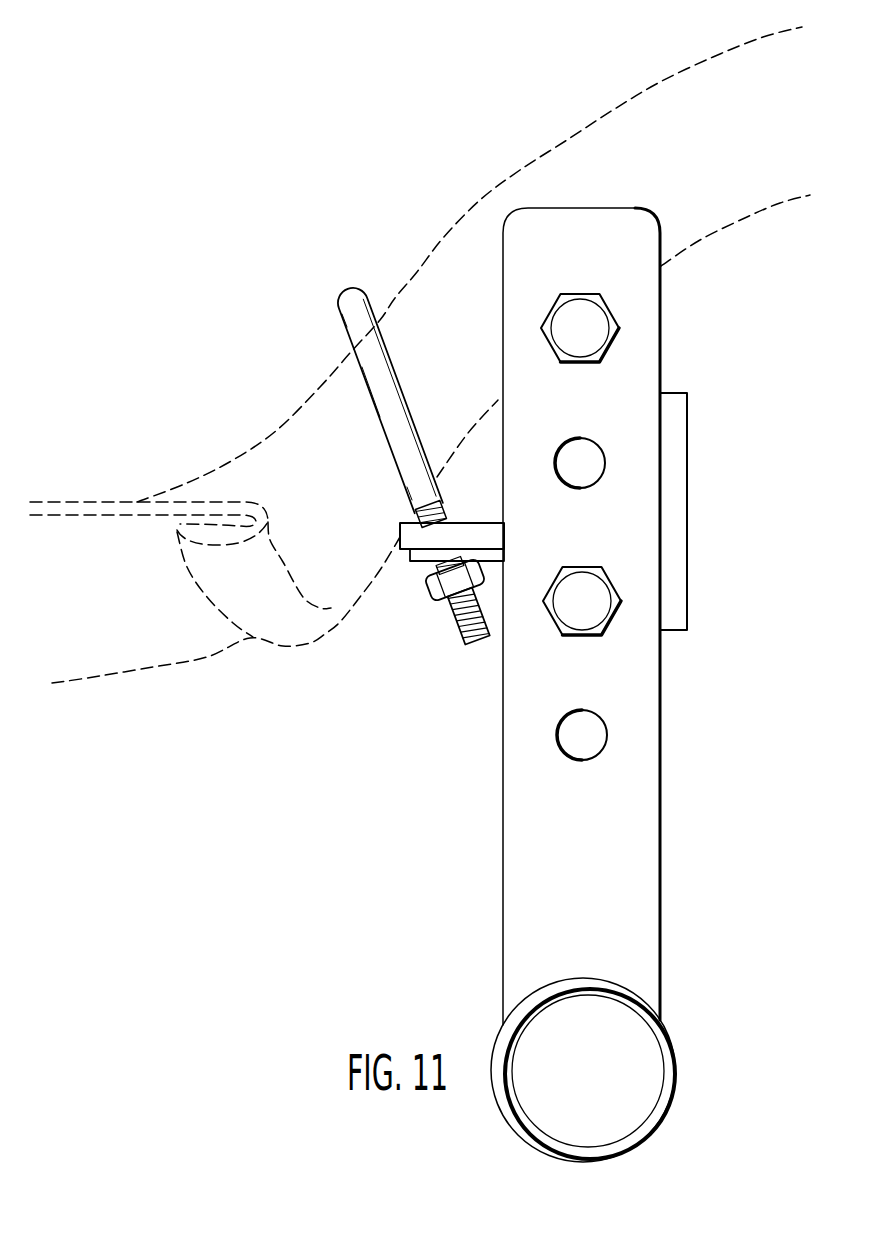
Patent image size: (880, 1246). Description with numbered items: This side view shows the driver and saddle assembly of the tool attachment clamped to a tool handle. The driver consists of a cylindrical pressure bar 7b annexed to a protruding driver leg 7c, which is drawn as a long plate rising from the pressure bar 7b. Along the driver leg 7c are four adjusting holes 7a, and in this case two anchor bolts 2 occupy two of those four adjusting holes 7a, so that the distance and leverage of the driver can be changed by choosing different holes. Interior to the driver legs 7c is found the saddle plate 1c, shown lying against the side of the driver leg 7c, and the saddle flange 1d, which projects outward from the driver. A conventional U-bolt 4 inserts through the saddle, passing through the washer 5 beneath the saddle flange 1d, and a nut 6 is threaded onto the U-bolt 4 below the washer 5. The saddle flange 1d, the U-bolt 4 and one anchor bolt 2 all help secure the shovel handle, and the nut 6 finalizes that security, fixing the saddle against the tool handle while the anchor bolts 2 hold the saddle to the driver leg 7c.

The saddle plate 1c is at (687, 539).
The saddle flange 1d is at (400, 549).
The anchor bolt 2 is at (619, 326).
The U-bolt 4 is at (339, 312).
The washer 5 is at (500, 562).
The nut 6 is at (440, 585).
The adjusting holes 7a is at (605, 460).
The pressure bar 7b is at (677, 1070).
The driver leg 7c is at (662, 880).